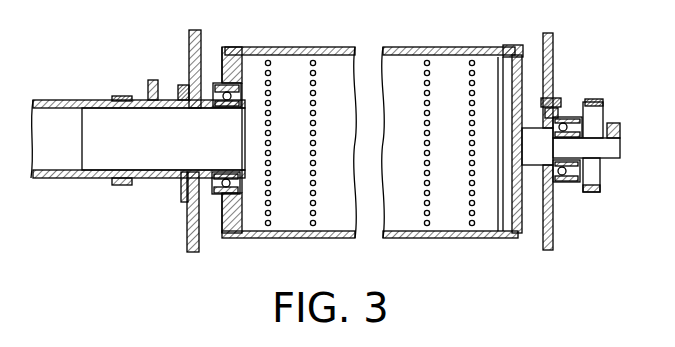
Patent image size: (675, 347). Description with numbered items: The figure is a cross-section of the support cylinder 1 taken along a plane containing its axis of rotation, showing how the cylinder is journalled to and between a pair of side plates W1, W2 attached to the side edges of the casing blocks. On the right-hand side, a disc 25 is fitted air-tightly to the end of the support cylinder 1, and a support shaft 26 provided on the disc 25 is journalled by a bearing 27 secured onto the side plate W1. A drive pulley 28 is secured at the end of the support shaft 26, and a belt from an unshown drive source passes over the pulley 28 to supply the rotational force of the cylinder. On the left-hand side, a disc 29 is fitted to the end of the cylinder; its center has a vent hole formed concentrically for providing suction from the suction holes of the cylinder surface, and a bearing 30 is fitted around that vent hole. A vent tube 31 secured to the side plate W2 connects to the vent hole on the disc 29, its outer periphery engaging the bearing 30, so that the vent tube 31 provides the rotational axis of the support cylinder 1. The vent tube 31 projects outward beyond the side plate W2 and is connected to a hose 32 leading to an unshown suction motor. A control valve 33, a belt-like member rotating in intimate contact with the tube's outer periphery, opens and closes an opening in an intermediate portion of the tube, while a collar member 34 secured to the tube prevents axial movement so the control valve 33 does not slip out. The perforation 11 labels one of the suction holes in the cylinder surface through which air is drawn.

The support cylinder 1 is at (353, 48).
The perforations 11 is at (270, 111).
The disc 25 is at (519, 62).
The support shaft 26 is at (612, 146).
The bearing 27 is at (571, 183).
The drive pulley 28 is at (597, 122).
The disc 29 is at (229, 51).
The bearing 30 is at (224, 108).
The vent tube 31 is at (187, 210).
The hose 32 is at (60, 178).
The control valve 33 is at (154, 180).
The collar member 34 is at (120, 95).
The side plate W1 is at (554, 48).
The side plate W2 is at (193, 46).